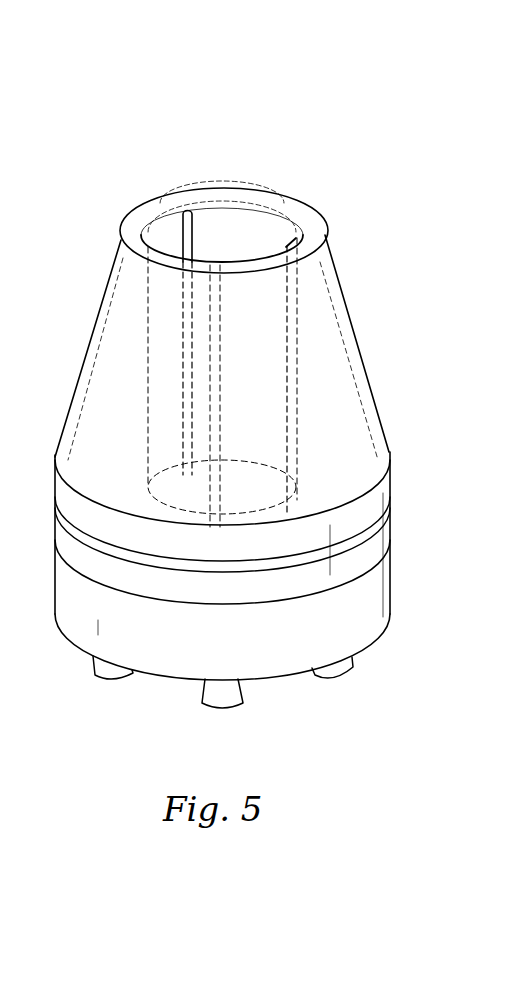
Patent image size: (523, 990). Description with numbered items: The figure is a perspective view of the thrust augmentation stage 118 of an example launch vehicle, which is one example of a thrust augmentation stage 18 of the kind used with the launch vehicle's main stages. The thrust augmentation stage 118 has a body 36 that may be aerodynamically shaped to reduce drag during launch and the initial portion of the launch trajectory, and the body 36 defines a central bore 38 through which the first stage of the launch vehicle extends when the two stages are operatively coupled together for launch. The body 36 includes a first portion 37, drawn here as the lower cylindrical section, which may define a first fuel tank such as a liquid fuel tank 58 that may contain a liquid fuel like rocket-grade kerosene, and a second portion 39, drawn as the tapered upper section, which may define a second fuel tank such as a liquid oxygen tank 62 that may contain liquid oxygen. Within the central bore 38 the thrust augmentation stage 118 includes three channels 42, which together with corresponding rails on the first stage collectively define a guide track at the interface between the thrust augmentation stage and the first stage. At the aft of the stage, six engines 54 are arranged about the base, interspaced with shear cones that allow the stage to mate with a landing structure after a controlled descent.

The thrust augmentation stage 118 is at (341, 71).
The thrust augmentation stage 18 is at (313, 130).
The body 36 is at (349, 274).
The first portion 37 is at (392, 498).
The central bore 38 is at (247, 218).
The second portion 39 is at (372, 393).
The channels 42 is at (287, 243).
The engines 54 is at (108, 681).
The liquid fuel tank 58 is at (98, 525).
The liquid oxygen tank 62 is at (100, 392).